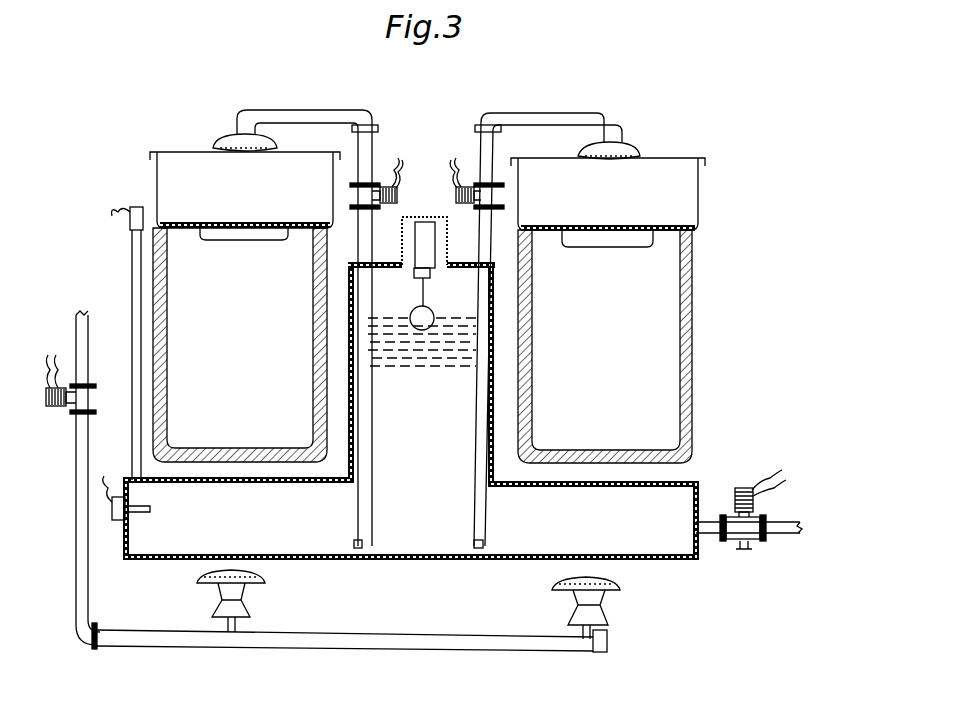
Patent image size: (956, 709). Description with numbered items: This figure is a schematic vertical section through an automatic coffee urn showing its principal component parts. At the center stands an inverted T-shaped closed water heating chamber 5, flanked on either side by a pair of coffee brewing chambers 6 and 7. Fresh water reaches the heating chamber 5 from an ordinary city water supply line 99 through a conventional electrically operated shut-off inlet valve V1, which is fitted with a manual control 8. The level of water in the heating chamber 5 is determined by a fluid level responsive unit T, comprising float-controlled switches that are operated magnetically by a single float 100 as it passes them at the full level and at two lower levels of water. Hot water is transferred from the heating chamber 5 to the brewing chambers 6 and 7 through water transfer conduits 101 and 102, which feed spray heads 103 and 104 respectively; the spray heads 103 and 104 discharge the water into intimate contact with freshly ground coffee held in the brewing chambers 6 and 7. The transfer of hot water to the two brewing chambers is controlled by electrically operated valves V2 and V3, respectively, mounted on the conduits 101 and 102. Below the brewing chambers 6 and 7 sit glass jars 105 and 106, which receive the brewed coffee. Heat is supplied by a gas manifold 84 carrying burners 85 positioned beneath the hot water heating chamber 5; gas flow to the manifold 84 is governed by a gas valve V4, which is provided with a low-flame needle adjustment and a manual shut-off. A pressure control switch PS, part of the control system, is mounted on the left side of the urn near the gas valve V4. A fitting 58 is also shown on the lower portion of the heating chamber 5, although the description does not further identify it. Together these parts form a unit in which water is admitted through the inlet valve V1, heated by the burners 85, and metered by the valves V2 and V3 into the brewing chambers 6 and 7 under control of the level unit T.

The water heating chamber 5 is at (500, 395).
The coffee brewing chamber 6 is at (330, 190).
The coffee brewing chamber 7 is at (696, 200).
The manual control 8 is at (738, 552).
The inlet fitting 58 is at (126, 518).
The gas manifold 84 is at (408, 627).
The burners 85 is at (265, 585).
The city water supply line 99 is at (790, 536).
The float 100 is at (432, 312).
The water transfer conduit 101 is at (362, 262).
The water transfer conduit 102 is at (480, 262).
The spray head 103 is at (240, 136).
The spray head 104 is at (637, 152).
The glass jar 105 is at (170, 302).
The glass jar 106 is at (536, 302).
The fluid level responsive unit T is at (425, 212).
The pressure control switch PS is at (136, 208).
The inlet valve V1 is at (735, 516).
The electrically operated valve V2 is at (379, 183).
The electrically operated valve V3 is at (473, 182).
The gas valve V4 is at (70, 408).